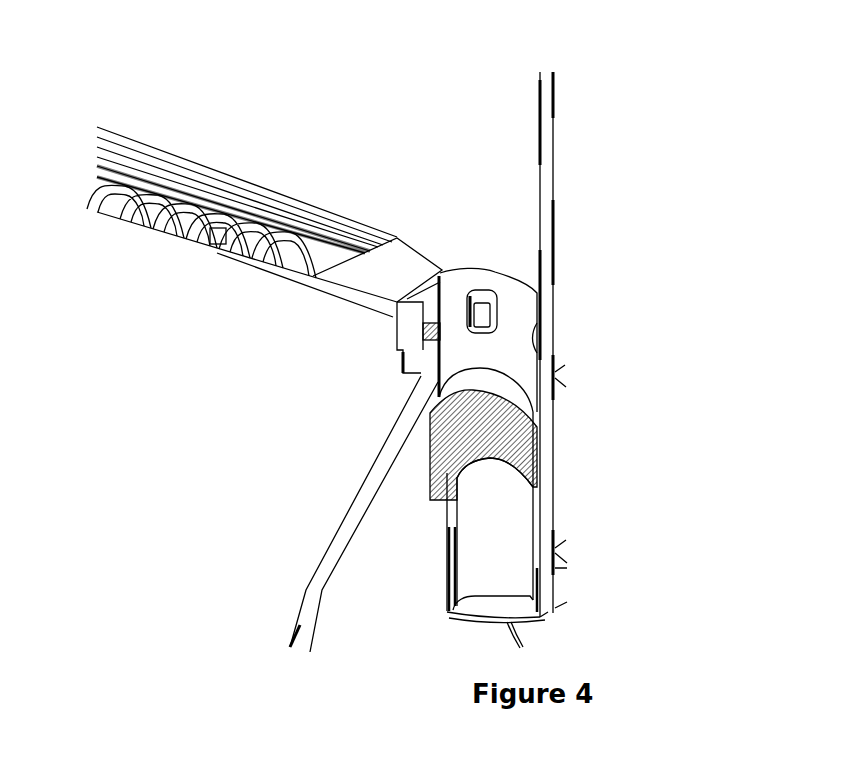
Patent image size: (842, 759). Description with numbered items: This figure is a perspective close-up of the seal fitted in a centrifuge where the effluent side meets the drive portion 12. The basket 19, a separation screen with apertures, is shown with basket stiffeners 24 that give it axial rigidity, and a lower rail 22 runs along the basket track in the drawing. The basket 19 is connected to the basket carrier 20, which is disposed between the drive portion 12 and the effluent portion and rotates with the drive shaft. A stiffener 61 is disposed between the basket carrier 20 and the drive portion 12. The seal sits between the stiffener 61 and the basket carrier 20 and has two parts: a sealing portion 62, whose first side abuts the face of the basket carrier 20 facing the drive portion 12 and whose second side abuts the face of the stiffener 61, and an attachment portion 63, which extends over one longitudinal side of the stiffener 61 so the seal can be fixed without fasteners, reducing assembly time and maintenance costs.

The drive portion 12 is at (580, 341).
The basket 19 is at (388, 260).
The basket carrier 20 is at (318, 583).
The roller track lower rail 22 is at (222, 258).
The basket stiffeners 24 is at (366, 214).
The stiffener 61 is at (450, 543).
The sealing portion 62 is at (455, 431).
The attachment portion 63 is at (447, 457).